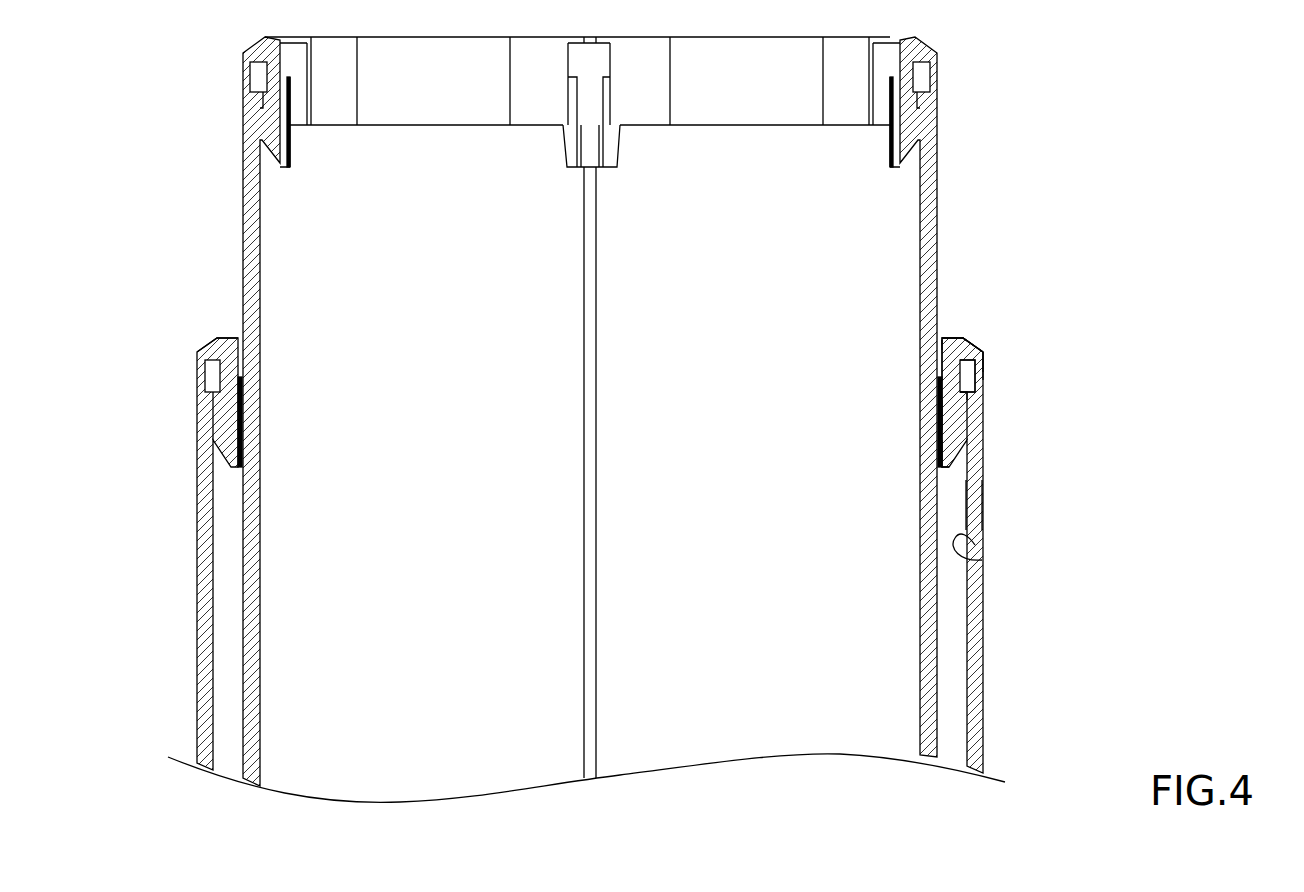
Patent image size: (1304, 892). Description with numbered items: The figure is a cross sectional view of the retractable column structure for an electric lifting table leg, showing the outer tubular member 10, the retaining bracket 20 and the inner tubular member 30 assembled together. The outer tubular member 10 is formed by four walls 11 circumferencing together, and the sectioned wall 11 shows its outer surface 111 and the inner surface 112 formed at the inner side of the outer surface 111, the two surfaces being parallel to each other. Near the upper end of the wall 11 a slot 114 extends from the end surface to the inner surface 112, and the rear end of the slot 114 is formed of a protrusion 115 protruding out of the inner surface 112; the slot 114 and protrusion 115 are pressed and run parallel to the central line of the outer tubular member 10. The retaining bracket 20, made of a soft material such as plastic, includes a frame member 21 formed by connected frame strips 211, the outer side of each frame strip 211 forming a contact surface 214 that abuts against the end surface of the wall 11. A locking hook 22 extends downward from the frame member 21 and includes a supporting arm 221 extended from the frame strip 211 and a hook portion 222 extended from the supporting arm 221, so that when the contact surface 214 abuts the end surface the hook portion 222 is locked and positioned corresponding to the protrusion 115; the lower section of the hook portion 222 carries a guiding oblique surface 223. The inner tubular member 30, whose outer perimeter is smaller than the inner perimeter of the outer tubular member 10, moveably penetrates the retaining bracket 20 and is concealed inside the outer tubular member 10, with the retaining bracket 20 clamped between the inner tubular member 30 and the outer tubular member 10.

The outer tubular member 10 is at (1034, 701).
The wall 11 is at (996, 642).
The outer surface 111 is at (985, 503).
The inner surface 112 is at (982, 560).
The slot 114 is at (968, 380).
The protrusion 115 is at (968, 402).
The retaining bracket 20 is at (951, 322).
The frame member 21 is at (970, 326).
The frame strip 211 is at (975, 352).
The contact surface 214 is at (985, 372).
The locking hook 22 is at (816, 358).
The supporting arm 221 is at (945, 368).
The hook portion 222 is at (945, 418).
The guiding oblique surface 223 is at (948, 444).
The inner tubular member 30 is at (944, 167).